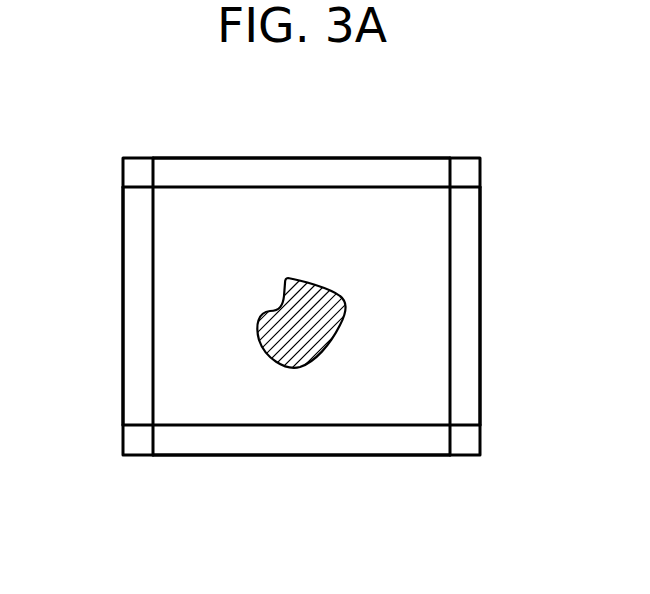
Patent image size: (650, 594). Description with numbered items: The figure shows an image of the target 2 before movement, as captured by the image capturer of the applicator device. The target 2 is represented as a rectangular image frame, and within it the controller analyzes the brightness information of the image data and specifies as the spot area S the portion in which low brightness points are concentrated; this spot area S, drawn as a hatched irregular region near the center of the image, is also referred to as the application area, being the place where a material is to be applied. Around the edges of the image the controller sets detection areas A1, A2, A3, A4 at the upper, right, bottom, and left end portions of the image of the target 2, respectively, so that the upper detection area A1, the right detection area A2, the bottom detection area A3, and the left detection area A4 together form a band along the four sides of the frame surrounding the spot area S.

The target 2 is at (415, 152).
The detection area A1 is at (300, 157).
The detection area A2 is at (481, 305).
The detection area A3 is at (300, 457).
The detection area A4 is at (122, 307).
The spot area S is at (288, 277).